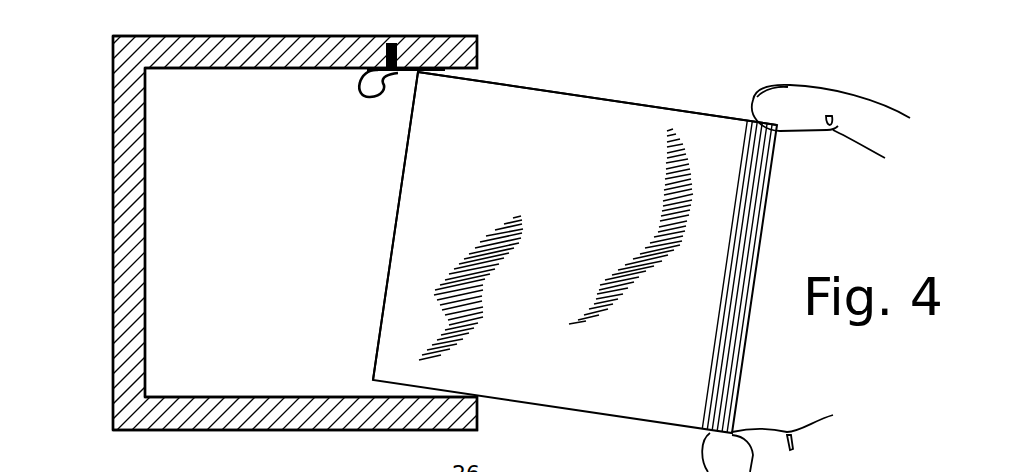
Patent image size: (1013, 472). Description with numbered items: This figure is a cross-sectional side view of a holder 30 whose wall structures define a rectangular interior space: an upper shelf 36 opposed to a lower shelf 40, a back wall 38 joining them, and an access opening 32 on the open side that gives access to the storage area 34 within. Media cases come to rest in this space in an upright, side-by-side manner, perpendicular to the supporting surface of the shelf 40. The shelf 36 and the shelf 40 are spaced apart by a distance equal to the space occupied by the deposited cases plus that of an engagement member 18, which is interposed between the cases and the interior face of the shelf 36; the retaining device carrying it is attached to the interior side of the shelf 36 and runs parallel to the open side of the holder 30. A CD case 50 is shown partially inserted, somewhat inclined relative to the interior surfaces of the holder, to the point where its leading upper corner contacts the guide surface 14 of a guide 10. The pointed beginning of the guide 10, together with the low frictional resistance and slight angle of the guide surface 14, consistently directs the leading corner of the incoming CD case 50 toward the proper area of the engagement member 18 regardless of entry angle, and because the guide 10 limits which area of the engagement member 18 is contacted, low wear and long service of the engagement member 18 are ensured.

The guide 10 is at (401, 84).
The guide surface 14 is at (418, 74).
The engagement member 18 is at (363, 81).
The holder 30 is at (100, 279).
The access opening 32 is at (470, 72).
The storage area 34 is at (188, 215).
The shelf 36 is at (280, 53).
The back wall 38 is at (136, 316).
The shelf 40 is at (242, 413).
The CD case 50 is at (642, 105).